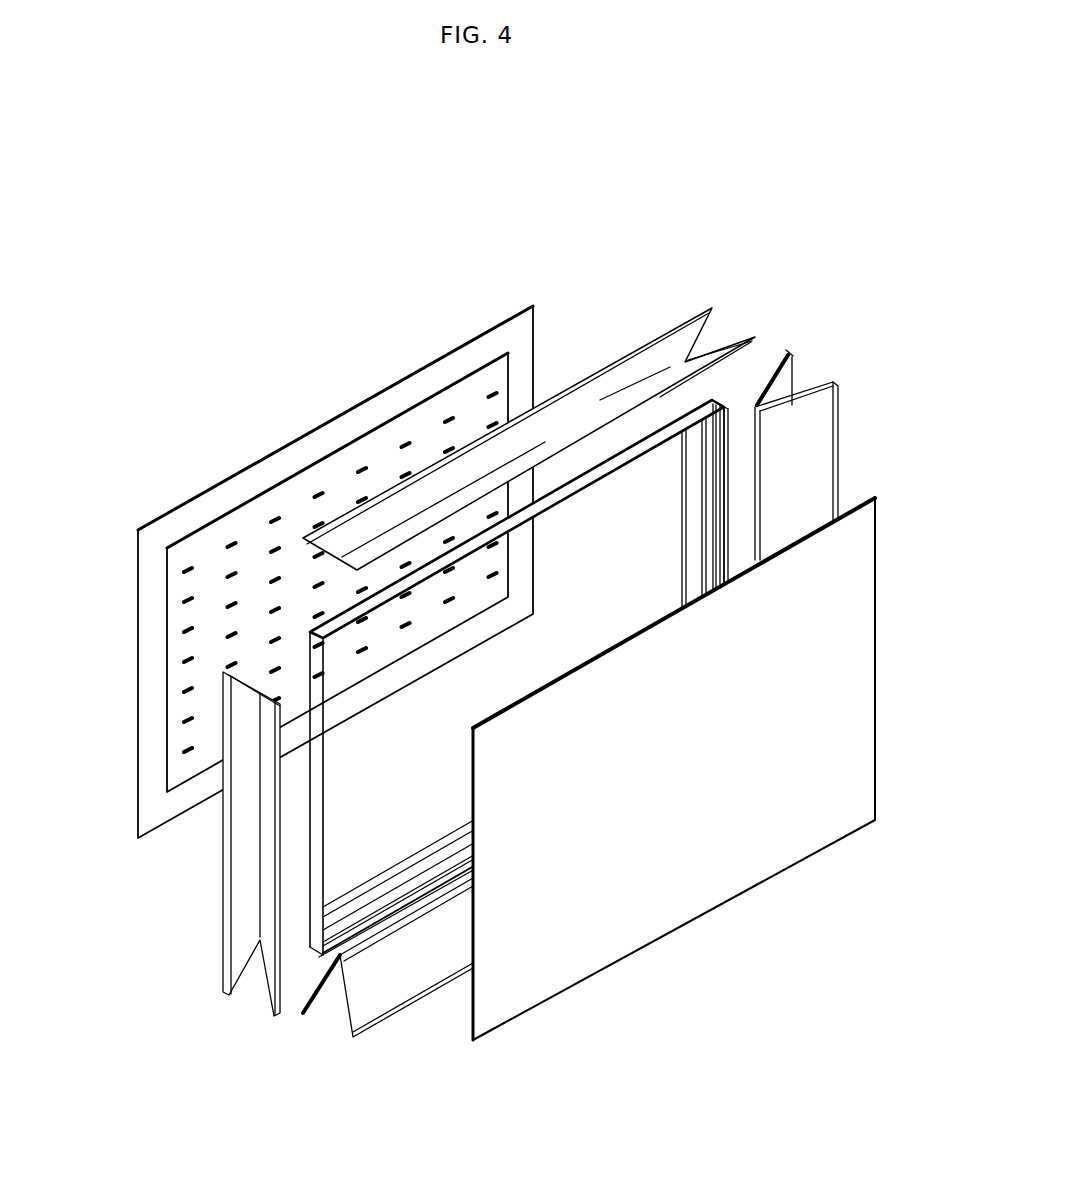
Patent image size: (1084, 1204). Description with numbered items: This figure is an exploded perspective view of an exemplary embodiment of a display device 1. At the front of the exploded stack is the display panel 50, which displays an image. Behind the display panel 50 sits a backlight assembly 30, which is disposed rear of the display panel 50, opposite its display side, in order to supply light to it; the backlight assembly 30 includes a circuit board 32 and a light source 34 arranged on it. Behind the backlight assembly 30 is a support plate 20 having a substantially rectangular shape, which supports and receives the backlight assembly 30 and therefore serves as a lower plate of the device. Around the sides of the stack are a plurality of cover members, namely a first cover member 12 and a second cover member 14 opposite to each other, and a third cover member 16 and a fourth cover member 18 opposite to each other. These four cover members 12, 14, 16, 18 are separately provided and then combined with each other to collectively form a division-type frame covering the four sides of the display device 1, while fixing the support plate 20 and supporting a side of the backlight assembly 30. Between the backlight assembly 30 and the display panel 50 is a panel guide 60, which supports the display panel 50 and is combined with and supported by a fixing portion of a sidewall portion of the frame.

The display device 1 is at (494, 219).
The first cover member 12 is at (230, 832).
The second cover member 14 is at (834, 461).
The third cover member 16 is at (387, 985).
The fourth cover member 18 is at (638, 346).
The support plate 20 is at (329, 438).
The backlight assembly 30 is at (337, 524).
The circuit board 32 is at (420, 424).
The light source 34 is at (492, 394).
The display panel 50 is at (705, 896).
The panel guide 60 is at (316, 910).